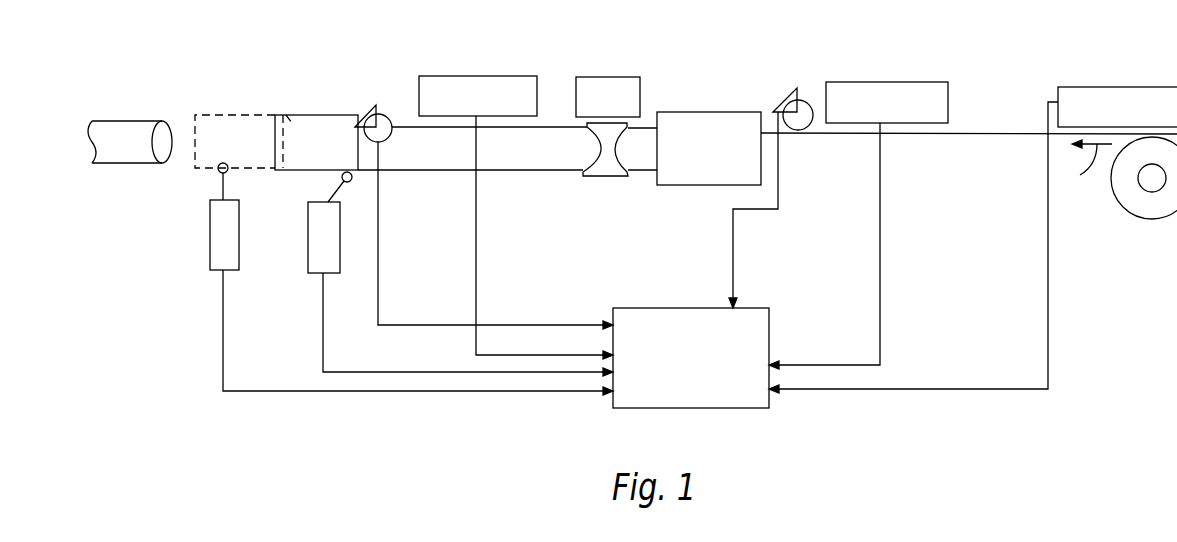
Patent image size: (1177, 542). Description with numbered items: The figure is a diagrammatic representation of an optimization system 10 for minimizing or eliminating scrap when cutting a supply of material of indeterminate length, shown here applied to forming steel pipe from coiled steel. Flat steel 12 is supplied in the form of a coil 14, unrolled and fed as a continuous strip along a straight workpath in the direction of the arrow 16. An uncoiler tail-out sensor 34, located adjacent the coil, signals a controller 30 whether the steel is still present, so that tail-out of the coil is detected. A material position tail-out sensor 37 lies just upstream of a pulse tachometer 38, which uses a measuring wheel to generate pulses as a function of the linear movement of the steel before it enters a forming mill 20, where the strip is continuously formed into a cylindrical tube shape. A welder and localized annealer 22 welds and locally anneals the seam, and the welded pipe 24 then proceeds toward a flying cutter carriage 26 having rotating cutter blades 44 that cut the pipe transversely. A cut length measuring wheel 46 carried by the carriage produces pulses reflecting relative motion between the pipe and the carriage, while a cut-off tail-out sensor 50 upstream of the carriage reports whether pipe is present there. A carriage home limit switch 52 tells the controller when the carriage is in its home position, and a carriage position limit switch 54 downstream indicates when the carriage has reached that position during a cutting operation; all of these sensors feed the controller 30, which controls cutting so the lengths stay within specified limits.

The optimization system 10 is at (771, 44).
The flat steel 12 is at (978, 133).
The coil 14 is at (1149, 226).
The arrow 16 is at (1088, 176).
The forming mill 20 is at (698, 112).
The welder and localized annealer 22 is at (617, 68).
The welded pipe 24 is at (120, 120).
The flying cutter carriage 26 is at (300, 172).
The controller 30 is at (640, 300).
The uncoiler tail-out sensor 34 is at (1095, 87).
The material position tail-out sensor 37 is at (867, 82).
The pulse tachometer 38 is at (803, 100).
The rotating cutter blades 44 is at (302, 112).
The cut length measuring wheel 46 is at (381, 114).
The cut-off tail-out sensor 50 is at (475, 76).
The carriage home limit switch 52 is at (308, 247).
The carriage position limit switch 54 is at (210, 242).